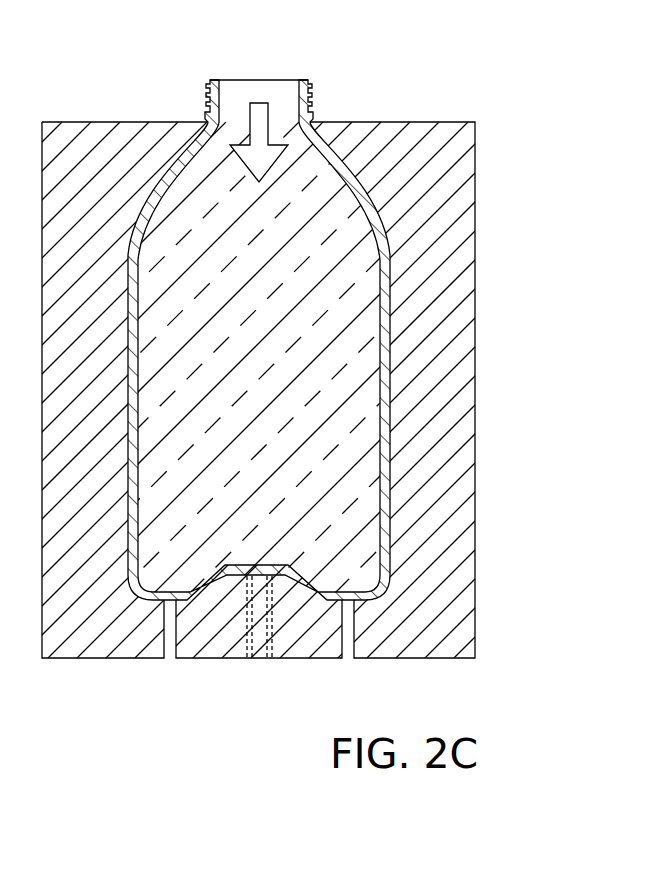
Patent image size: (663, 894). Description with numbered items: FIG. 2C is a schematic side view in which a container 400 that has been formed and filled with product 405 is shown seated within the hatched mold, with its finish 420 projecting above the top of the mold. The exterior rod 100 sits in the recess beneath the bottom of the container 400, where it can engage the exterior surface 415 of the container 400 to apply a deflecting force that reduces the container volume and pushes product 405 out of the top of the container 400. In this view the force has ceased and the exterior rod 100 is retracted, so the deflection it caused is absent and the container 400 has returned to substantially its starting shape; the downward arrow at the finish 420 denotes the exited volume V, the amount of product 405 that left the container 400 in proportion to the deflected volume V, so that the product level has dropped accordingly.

The exterior rod 100 is at (224, 630).
The container 400 is at (175, 157).
The product 405 is at (272, 364).
The exterior surface 415 is at (283, 578).
The container finish 420 is at (233, 121).
The deflected volume V is at (275, 97).